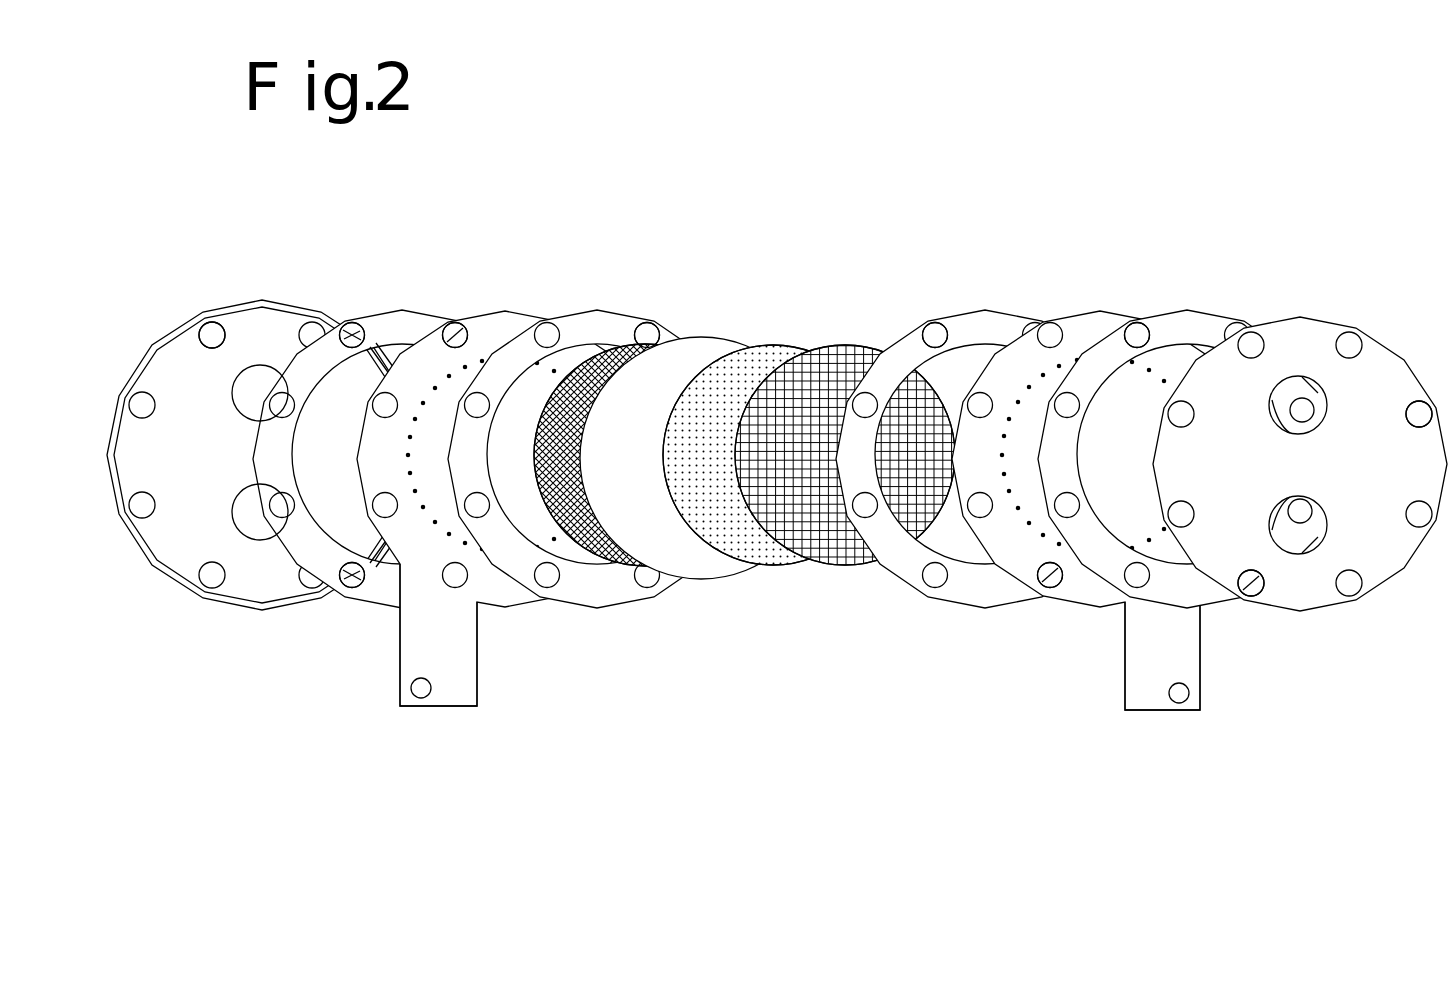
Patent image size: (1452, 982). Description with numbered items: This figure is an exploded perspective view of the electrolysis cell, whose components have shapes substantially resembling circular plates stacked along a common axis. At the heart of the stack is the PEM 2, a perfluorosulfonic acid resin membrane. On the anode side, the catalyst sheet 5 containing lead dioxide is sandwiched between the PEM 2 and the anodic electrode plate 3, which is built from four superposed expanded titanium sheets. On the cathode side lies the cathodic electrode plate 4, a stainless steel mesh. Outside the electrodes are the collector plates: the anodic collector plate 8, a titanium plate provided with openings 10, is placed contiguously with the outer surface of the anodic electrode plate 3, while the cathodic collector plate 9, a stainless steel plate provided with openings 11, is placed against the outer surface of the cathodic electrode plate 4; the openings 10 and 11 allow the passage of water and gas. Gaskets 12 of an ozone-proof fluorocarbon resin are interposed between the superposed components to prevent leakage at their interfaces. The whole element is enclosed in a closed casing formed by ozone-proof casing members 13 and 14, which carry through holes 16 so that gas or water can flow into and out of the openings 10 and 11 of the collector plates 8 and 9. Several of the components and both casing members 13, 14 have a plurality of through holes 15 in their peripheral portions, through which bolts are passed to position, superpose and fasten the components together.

The PEM 2 is at (692, 550).
The anodic electrode plate 3 is at (840, 567).
The cathodic electrode plate 4 is at (610, 563).
The catalyst sheet 5 is at (760, 557).
The anodic collector plate 8 is at (1149, 697).
The cathodic collector plate 9 is at (443, 692).
The openings 10 is at (1062, 365).
The openings 11 is at (473, 364).
The gaskets 12 is at (387, 320).
The casing member 13 is at (1316, 598).
The casing member 14 is at (183, 567).
The through holes 15 is at (186, 338).
The through holes 16 is at (257, 520).